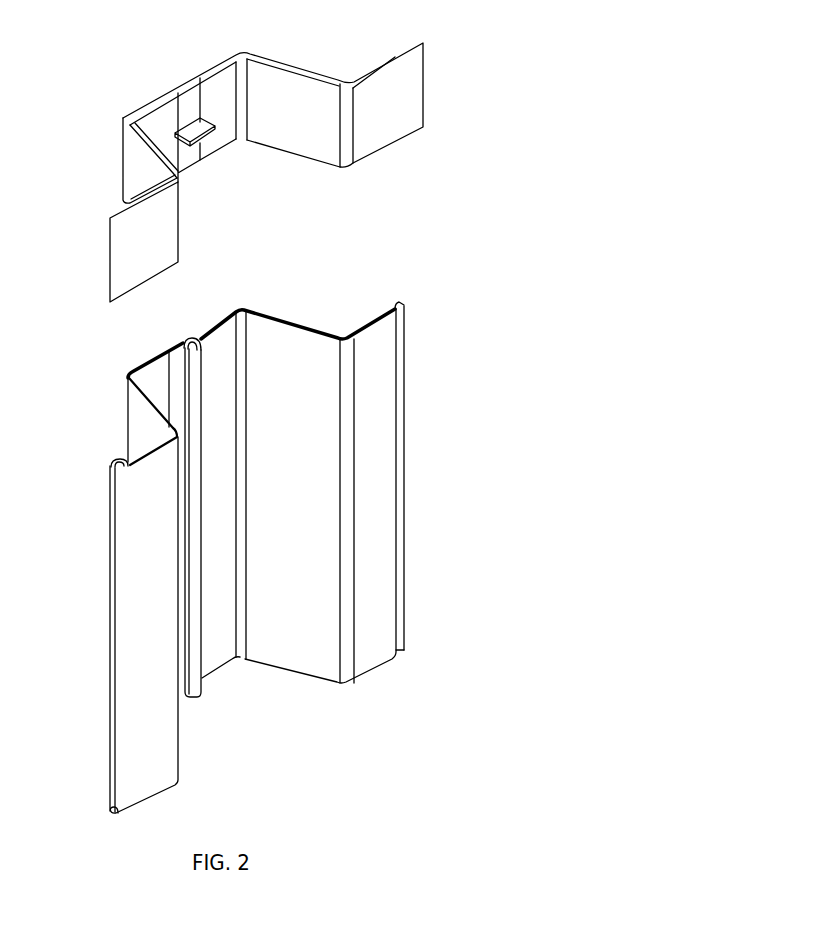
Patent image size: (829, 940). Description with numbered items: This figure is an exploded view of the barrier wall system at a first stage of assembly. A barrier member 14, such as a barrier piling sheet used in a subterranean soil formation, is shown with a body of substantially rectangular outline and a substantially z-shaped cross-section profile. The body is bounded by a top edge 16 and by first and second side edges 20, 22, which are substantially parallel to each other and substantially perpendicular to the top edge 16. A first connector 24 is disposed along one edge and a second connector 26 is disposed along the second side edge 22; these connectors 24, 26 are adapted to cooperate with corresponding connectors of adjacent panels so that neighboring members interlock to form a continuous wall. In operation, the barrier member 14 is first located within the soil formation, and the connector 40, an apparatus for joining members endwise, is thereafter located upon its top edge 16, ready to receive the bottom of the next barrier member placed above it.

The barrier member 14 is at (306, 471).
The top edge 16 is at (128, 375).
The first side edge 20 is at (136, 538).
The second side edge 22 is at (182, 340).
The first connector 24 is at (112, 700).
The second connector 26 is at (397, 302).
The connector 40 is at (425, 83).